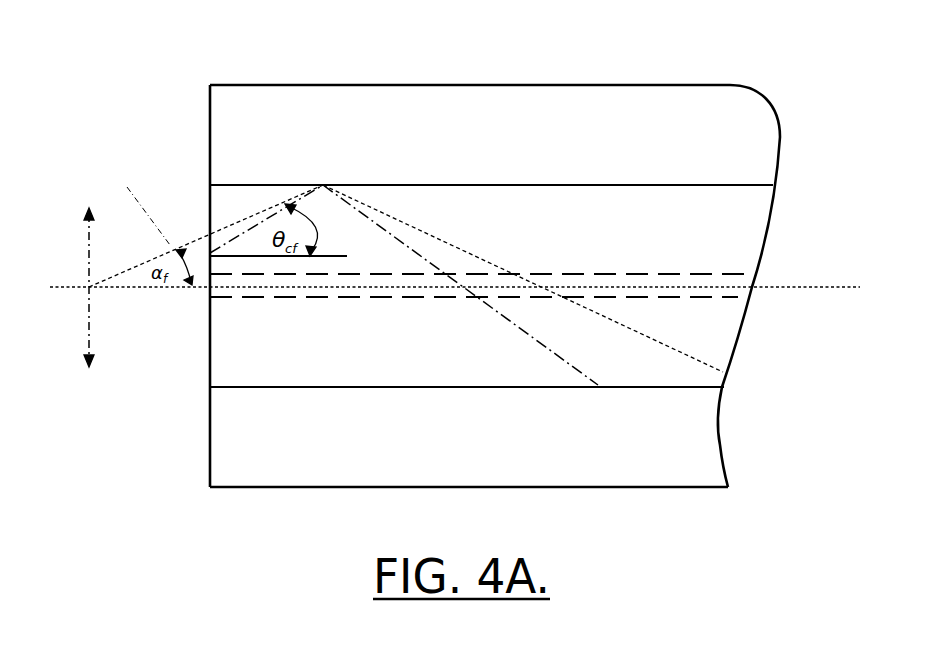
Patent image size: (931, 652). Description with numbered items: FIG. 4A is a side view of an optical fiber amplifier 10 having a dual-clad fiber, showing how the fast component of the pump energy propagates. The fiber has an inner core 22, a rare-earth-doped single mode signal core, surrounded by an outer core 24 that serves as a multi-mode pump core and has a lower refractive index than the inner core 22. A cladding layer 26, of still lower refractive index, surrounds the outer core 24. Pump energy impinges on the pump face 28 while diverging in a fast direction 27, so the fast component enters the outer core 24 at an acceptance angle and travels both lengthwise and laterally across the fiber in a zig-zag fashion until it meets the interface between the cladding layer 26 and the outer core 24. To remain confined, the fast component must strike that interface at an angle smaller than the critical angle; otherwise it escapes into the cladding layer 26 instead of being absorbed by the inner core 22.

The optical element 10 is at (491, 244).
The inner core 22 is at (442, 364).
The outer core 24 is at (788, 262).
The cladding layer 26 is at (779, 280).
The fast direction 27 is at (85, 337).
The pump face 28 is at (203, 138).